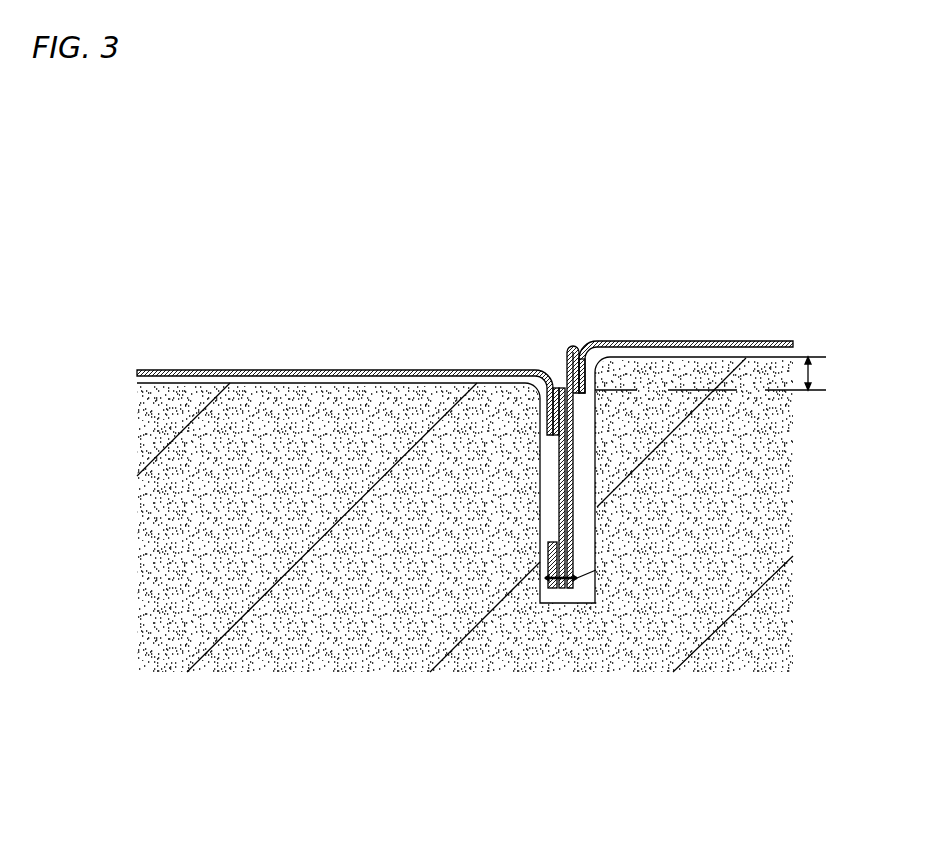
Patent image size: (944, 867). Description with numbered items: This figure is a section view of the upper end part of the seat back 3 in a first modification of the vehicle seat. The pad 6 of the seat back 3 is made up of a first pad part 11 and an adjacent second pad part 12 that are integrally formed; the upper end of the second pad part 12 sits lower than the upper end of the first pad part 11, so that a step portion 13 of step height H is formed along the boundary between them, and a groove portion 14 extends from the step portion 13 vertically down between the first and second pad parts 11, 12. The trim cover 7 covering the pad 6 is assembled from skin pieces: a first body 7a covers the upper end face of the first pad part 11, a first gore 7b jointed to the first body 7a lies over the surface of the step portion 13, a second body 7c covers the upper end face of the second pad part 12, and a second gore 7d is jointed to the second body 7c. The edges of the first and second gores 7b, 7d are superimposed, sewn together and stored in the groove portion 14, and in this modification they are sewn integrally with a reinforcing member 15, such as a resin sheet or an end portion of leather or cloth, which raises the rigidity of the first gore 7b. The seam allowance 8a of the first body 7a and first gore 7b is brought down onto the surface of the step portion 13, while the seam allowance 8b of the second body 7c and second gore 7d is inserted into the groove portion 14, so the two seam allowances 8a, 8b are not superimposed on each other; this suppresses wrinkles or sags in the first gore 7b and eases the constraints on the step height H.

The seat back 3 is at (189, 197).
The pad 6 is at (600, 787).
The trim cover 7 is at (433, 245).
The first body 7a is at (620, 342).
The first gore 7b is at (584, 356).
The second body 7c is at (500, 371).
The second gore 7d is at (555, 391).
The seam allowance 8a is at (596, 388).
The seam allowance 8b is at (548, 416).
The first pad part 11 is at (626, 672).
The second pad part 12 is at (490, 660).
The step portion 13 is at (574, 347).
The groove portion 14 is at (597, 587).
The reinforcing member 15 is at (548, 553).
The step height H is at (713, 374).